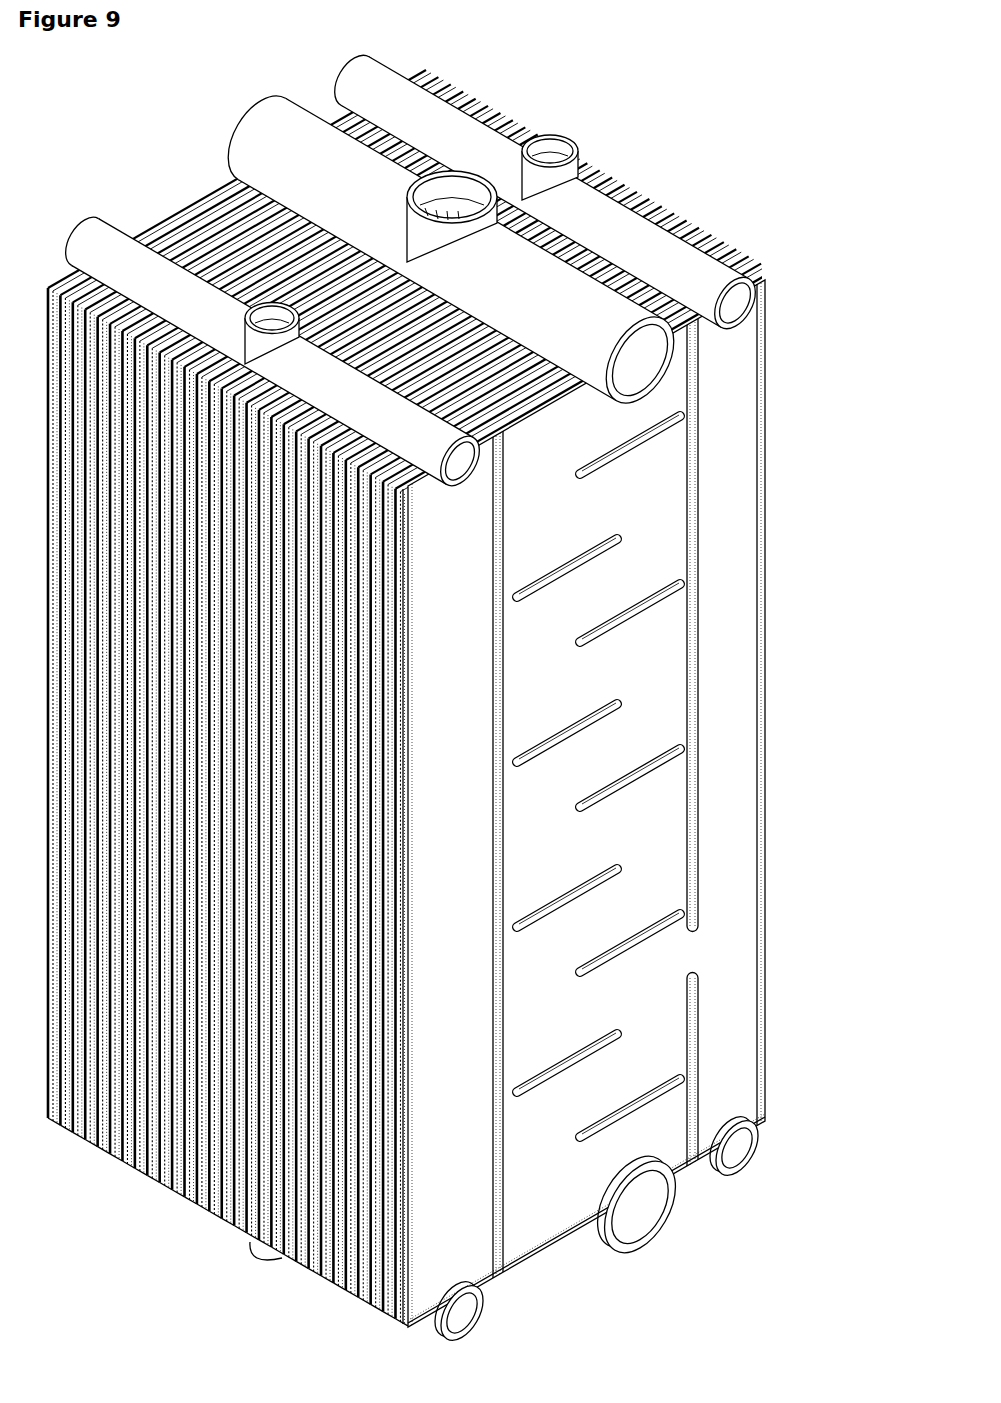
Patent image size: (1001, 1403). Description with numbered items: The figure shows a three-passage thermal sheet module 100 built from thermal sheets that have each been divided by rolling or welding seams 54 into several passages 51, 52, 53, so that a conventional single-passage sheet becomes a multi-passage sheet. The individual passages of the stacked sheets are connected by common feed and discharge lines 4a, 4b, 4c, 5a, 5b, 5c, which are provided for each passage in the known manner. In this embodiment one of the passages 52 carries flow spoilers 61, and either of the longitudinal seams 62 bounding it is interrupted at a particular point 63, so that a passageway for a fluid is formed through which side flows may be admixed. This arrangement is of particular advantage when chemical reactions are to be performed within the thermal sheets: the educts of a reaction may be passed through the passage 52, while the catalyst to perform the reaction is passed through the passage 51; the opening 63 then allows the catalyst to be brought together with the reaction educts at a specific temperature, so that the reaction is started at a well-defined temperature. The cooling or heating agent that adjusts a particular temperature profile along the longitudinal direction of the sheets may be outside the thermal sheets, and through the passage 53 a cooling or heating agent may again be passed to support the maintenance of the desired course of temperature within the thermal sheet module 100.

The thermal sheet module 100 is at (690, 230).
The feed and discharge line 5a is at (372, 86).
The feed and discharge line 5b is at (262, 128).
The feed and discharge line 5c is at (92, 246).
The feed and discharge line 4a is at (737, 1152).
The feed and discharge line 4b is at (634, 1218).
The feed and discharge line 4c is at (464, 1313).
The passage 51 is at (725, 642).
The passage 52 is at (670, 1143).
The passage 53 is at (430, 1222).
The rolling or welding seam 54 is at (498, 547).
The flow spoiler 61 is at (633, 433).
The longitudinal seam 62 is at (690, 808).
The interruption point 63 is at (688, 952).